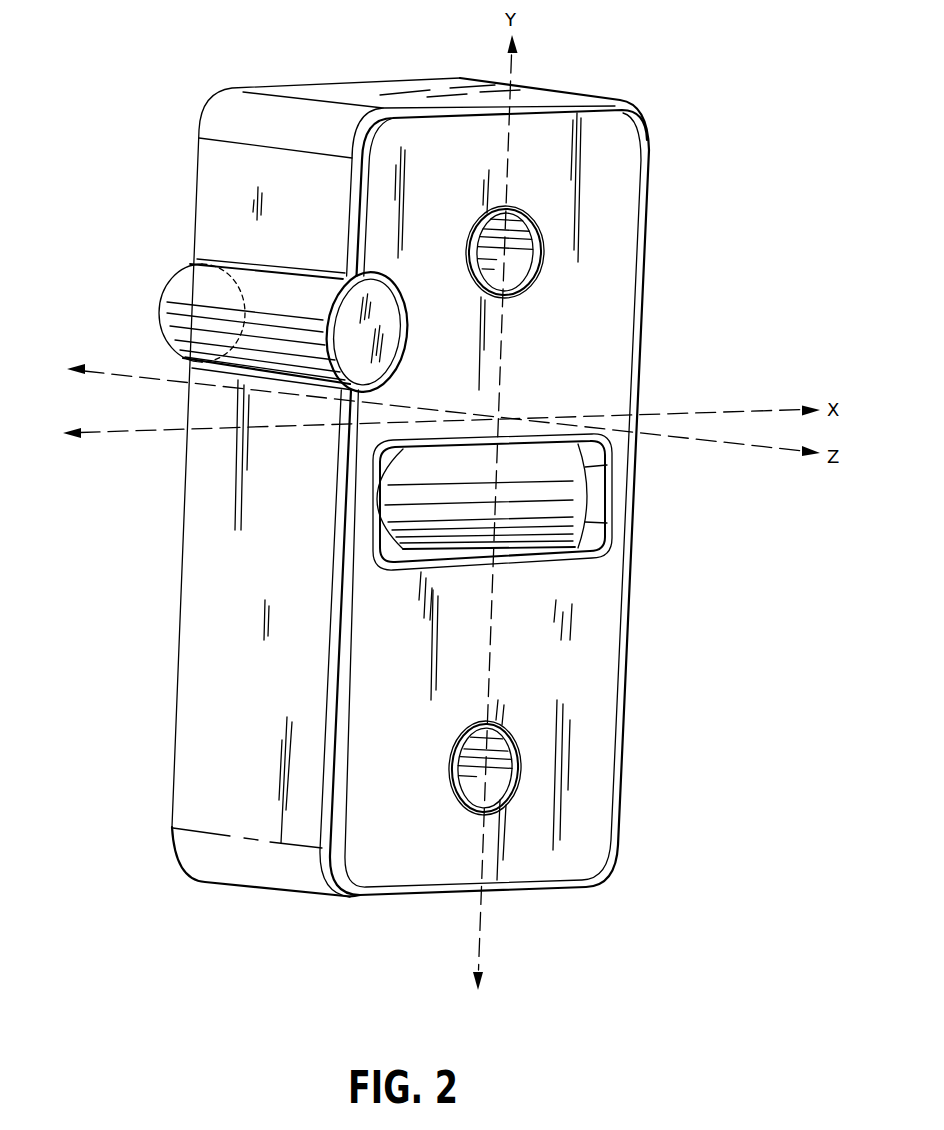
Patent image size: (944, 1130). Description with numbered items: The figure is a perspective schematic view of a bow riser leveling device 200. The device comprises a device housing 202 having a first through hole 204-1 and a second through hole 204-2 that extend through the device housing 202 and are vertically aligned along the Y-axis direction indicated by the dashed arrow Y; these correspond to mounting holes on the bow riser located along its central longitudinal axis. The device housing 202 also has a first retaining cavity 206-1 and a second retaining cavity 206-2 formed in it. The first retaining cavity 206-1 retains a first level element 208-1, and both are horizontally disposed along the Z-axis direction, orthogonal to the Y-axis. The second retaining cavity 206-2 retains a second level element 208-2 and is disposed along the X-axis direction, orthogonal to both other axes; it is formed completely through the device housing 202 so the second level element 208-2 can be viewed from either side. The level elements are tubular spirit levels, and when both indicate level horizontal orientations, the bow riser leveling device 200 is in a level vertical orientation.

The bow riser leveling device 200 is at (218, 72).
The device housing 202 is at (630, 147).
The first through hole 204-1 is at (520, 262).
The second through hole 204-2 is at (493, 778).
The first retaining cavity 206-1 is at (250, 250).
The second retaining cavity 206-2 is at (597, 540).
The first level element 208-1 is at (207, 293).
The second level element 208-2 is at (407, 517).